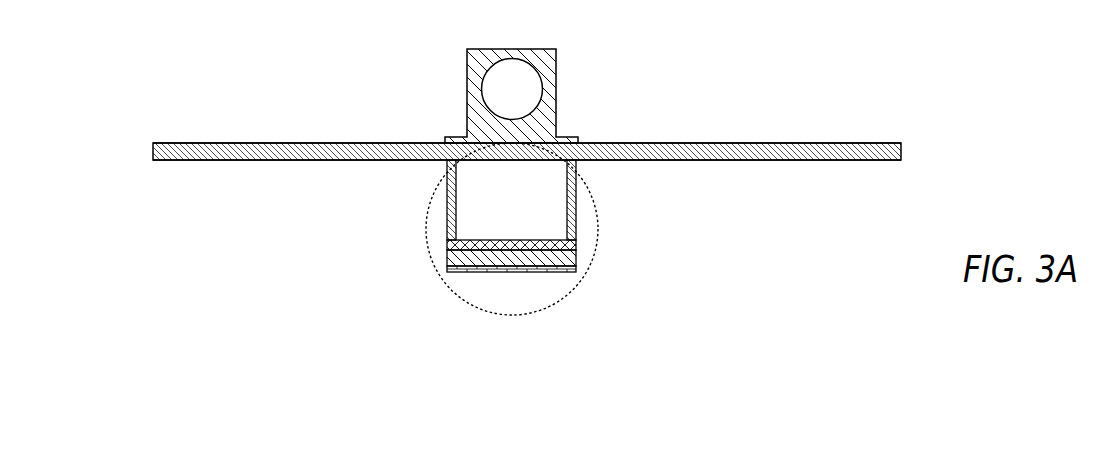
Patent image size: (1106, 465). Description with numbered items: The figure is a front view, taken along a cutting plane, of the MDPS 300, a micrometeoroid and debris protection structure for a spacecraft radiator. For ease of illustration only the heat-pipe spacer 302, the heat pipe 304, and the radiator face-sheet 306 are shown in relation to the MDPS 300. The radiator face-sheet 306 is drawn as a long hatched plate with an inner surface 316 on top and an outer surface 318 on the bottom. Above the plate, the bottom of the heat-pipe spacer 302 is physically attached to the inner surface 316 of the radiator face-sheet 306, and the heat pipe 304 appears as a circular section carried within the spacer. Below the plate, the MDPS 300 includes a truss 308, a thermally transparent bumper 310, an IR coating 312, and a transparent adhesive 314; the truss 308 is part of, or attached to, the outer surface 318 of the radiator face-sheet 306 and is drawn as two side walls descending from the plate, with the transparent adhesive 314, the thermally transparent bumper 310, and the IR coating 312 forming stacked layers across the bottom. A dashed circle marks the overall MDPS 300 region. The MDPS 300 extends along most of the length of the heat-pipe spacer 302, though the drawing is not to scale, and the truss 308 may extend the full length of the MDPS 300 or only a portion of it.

The MDPS 300 is at (458, 297).
The heat-pipe spacer 302 is at (555, 53).
The heat pipe 304 is at (523, 96).
The radiator face-sheet 306 is at (743, 152).
The truss 308 is at (567, 203).
The thermally transparent bumper 310 is at (560, 261).
The IR coating 312 is at (526, 267).
The transparent adhesive 314 is at (448, 248).
The inner surface 316 is at (623, 143).
The outer surface 318 is at (658, 160).